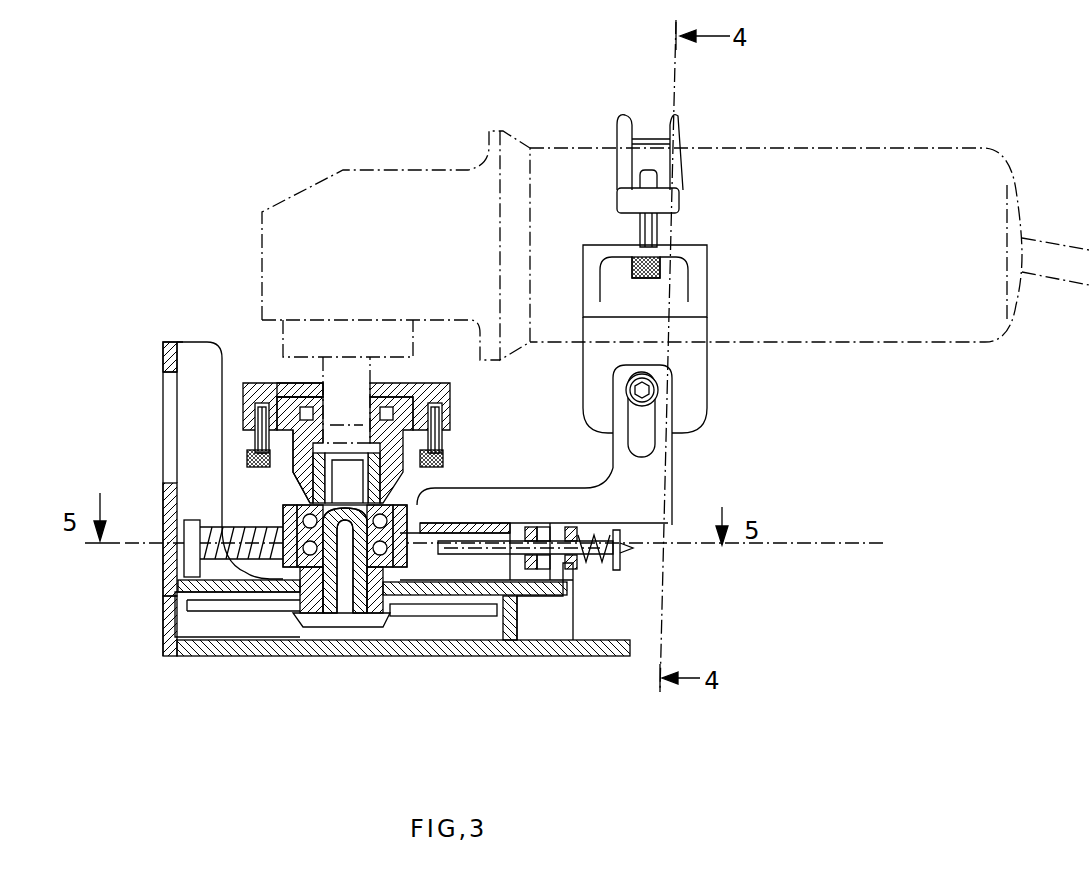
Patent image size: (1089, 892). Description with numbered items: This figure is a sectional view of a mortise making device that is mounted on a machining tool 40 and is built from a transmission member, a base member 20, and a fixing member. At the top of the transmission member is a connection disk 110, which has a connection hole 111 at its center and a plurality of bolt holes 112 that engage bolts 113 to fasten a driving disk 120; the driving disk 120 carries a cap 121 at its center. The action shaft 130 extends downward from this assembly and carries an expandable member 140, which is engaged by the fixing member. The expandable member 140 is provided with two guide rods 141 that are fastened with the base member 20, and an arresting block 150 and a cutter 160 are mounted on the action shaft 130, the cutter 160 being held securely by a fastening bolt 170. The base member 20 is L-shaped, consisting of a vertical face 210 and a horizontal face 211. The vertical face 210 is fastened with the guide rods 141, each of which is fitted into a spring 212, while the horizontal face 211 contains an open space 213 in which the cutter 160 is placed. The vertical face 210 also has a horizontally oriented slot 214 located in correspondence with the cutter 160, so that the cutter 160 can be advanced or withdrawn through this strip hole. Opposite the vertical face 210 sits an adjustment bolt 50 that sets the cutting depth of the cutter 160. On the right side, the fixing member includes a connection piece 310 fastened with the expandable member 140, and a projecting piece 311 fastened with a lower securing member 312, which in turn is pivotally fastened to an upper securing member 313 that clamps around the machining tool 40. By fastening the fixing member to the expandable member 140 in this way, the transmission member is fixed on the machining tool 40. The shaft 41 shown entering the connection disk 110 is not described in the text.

The base member 20 is at (500, 652).
The machining tool 40 is at (352, 168).
The motor shaft 41 is at (345, 400).
The adjustment bolt 50 is at (627, 560).
The connection disk 110 is at (253, 390).
The connection hole 111 is at (285, 393).
The bolt holes 112 is at (446, 412).
The bolts 113 is at (438, 470).
The driving disk 120 is at (240, 410).
The cap 121 is at (290, 485).
The action shaft 130 is at (450, 433).
The expandable member 140 is at (283, 595).
The guide rods 141 is at (160, 572).
The arresting block 150 is at (395, 614).
The cutter 160 is at (222, 606).
The fastening bolt 170 is at (362, 624).
The vertical face 210 is at (167, 357).
The horizontal face 211 is at (568, 652).
The spring 212 is at (218, 530).
The open space 213 is at (478, 598).
The slot 214 is at (158, 612).
The connection piece 310 is at (668, 556).
The projecting piece 311 is at (662, 469).
The lower securing member 312 is at (693, 362).
The upper securing member 313 is at (680, 127).